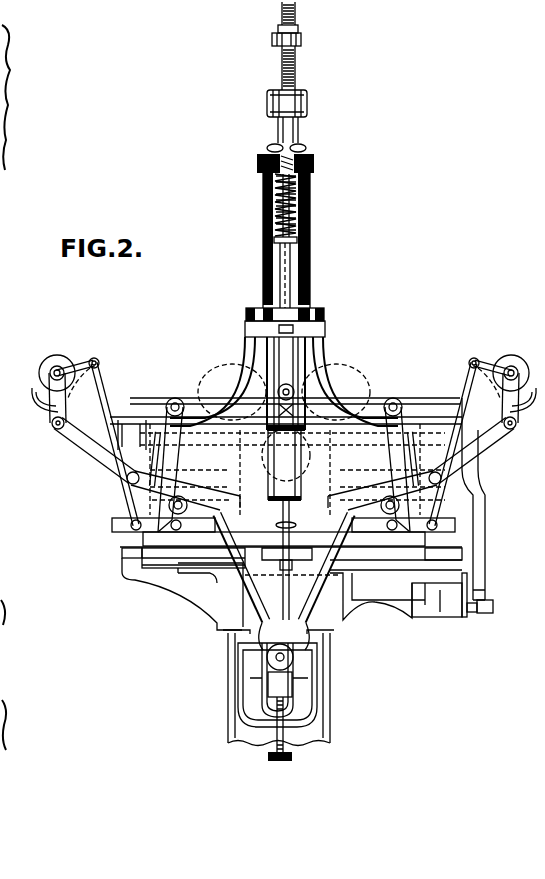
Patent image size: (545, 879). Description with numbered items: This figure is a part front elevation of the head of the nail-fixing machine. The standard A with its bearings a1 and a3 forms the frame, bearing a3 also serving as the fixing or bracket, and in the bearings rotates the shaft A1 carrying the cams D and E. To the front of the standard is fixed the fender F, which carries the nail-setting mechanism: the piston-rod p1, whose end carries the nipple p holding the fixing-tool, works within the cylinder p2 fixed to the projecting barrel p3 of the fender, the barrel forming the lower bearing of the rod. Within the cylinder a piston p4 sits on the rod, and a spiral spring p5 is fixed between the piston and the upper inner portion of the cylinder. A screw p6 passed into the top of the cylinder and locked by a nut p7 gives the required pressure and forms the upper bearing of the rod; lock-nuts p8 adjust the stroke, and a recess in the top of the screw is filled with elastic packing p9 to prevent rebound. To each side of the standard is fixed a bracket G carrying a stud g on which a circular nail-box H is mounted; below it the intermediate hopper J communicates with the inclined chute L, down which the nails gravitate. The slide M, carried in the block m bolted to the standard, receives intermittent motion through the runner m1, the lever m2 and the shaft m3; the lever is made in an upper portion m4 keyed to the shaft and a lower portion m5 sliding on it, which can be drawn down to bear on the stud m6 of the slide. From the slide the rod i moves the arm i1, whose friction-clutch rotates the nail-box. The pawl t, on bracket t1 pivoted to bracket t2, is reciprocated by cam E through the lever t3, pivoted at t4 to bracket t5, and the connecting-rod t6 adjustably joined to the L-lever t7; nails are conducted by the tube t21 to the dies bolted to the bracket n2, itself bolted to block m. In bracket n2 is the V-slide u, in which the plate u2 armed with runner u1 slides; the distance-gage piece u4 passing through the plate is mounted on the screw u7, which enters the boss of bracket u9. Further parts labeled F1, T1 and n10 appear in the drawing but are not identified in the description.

The nipple p is at (288, 262).
The piston-rod p1 is at (297, 75).
The cylinder p2 is at (311, 194).
The projecting barrel p3 is at (311, 212).
The piston p4 is at (311, 237).
The spiral spring p5 is at (263, 211).
The screw p6 is at (278, 30).
The nut p7 is at (306, 147).
The lock-nuts p8 is at (302, 42).
The elastic packing p9 is at (308, 93).
The cam D is at (284, 381).
The nail-box H is at (284, 363).
The intermediate hopper J is at (38, 396).
The pin or stud g is at (66, 368).
The arm or lever i1 is at (284, 354).
The rod i is at (102, 386).
The inclined chute L is at (66, 447).
The bracket G is at (126, 420).
The shaft m3 is at (175, 398).
The block m is at (132, 544).
The lower portion of lever m5 is at (284, 459).
The slide M is at (110, 526).
The stud or projection m6 is at (284, 525).
The lever m2 is at (277, 383).
The upper portion of lever m4 is at (316, 425).
The runner m1 is at (272, 419).
The fixing or bracket a3 is at (175, 407).
The bearing a1 is at (237, 433).
The chamber F1 is at (196, 463).
The shaft A1 is at (349, 429).
The cam E is at (336, 450).
The fender or bracket F is at (356, 465).
The pawl t is at (395, 558).
The bracket t1 is at (441, 580).
The bracket t2 is at (439, 595).
The lever t3 is at (419, 403).
The pivot t4 is at (377, 380).
The bracket t5 is at (350, 439).
The connecting-rod t6 is at (472, 478).
The L-lever t7 is at (480, 599).
The tube t21 is at (320, 522).
The bar T1 is at (120, 556).
The fixing or bracket n2 is at (140, 568).
The bracket n10 is at (287, 556).
The bracket u9 is at (335, 648).
The standard A is at (228, 634).
The distance-gage piece u4 is at (262, 676).
The V-slide u is at (268, 690).
The plate u2 is at (268, 680).
The runner u1 is at (284, 710).
The screw u7 is at (293, 757).